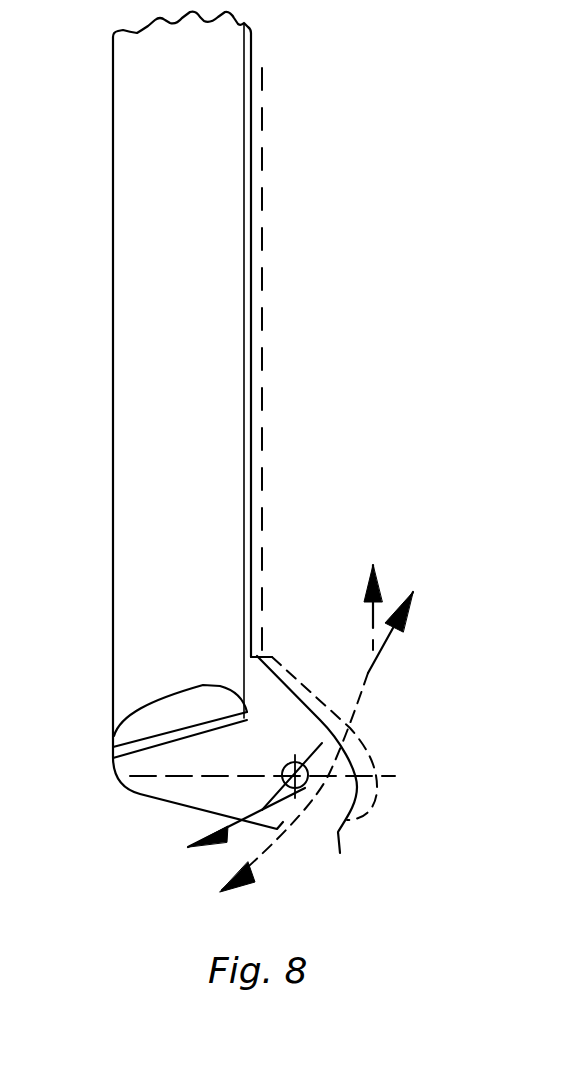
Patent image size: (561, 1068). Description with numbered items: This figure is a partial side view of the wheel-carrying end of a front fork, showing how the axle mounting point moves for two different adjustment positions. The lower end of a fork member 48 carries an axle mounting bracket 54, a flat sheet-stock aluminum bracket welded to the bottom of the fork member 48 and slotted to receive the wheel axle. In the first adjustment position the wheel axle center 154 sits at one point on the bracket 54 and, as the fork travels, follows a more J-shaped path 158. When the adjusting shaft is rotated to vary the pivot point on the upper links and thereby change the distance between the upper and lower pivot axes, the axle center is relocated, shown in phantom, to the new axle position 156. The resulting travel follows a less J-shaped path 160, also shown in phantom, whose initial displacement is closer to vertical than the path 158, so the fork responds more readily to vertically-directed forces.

The fork member 48 is at (140, 433).
The axle mounting bracket 54 is at (142, 785).
The wheel axle center 154 is at (279, 758).
The new axle position 156 is at (324, 772).
The more J-shaped path 158 is at (383, 665).
The less J-shaped path 160 is at (367, 660).